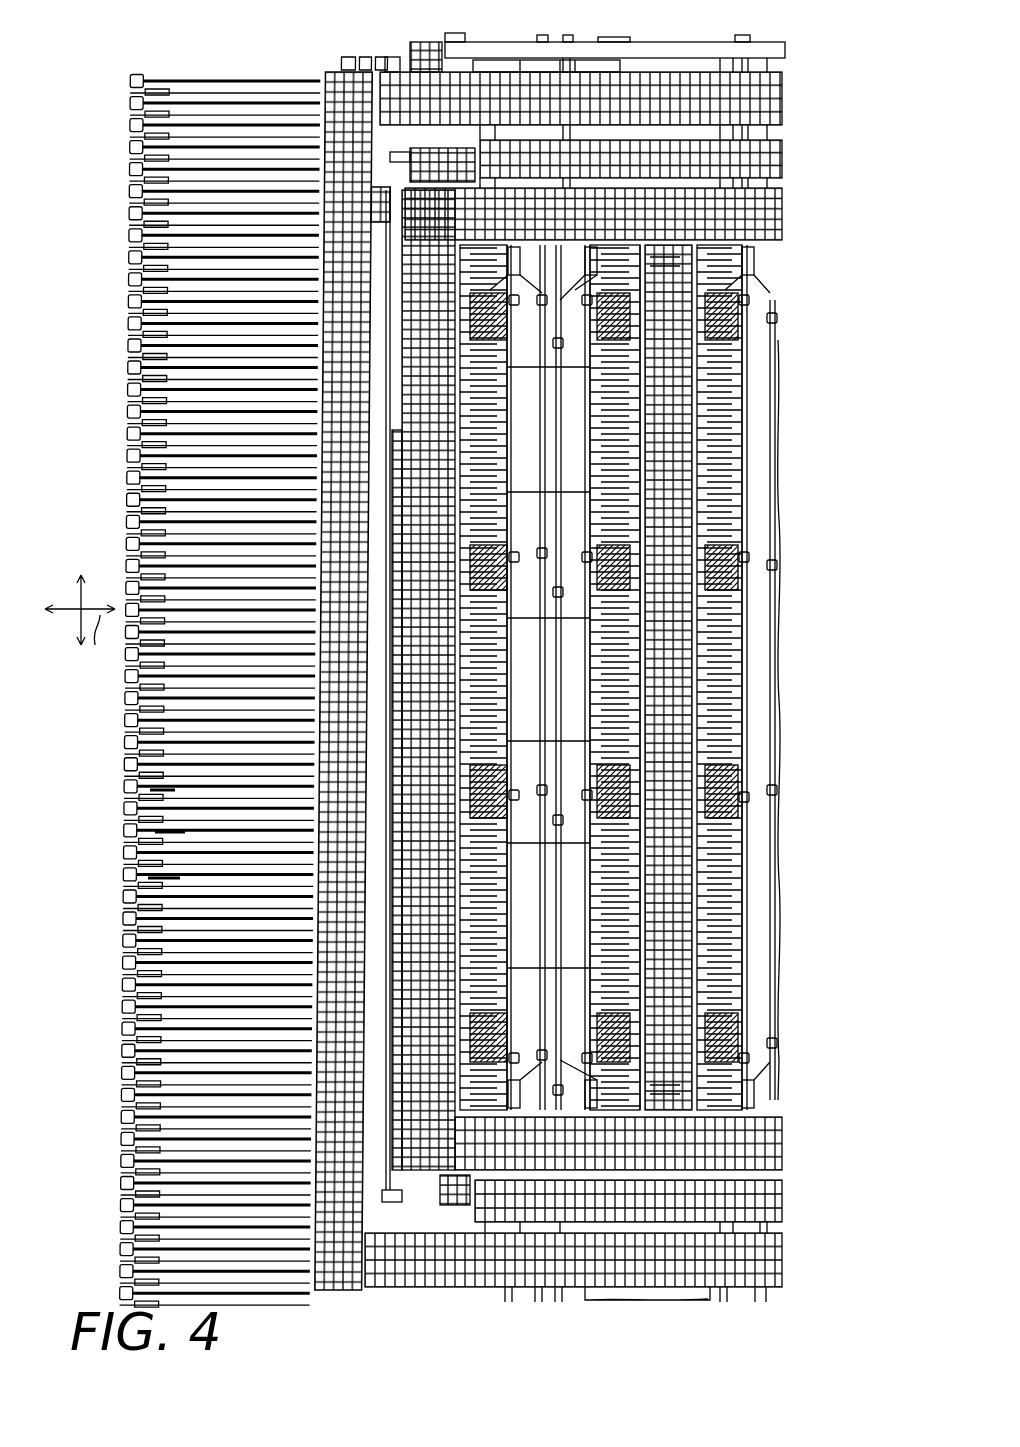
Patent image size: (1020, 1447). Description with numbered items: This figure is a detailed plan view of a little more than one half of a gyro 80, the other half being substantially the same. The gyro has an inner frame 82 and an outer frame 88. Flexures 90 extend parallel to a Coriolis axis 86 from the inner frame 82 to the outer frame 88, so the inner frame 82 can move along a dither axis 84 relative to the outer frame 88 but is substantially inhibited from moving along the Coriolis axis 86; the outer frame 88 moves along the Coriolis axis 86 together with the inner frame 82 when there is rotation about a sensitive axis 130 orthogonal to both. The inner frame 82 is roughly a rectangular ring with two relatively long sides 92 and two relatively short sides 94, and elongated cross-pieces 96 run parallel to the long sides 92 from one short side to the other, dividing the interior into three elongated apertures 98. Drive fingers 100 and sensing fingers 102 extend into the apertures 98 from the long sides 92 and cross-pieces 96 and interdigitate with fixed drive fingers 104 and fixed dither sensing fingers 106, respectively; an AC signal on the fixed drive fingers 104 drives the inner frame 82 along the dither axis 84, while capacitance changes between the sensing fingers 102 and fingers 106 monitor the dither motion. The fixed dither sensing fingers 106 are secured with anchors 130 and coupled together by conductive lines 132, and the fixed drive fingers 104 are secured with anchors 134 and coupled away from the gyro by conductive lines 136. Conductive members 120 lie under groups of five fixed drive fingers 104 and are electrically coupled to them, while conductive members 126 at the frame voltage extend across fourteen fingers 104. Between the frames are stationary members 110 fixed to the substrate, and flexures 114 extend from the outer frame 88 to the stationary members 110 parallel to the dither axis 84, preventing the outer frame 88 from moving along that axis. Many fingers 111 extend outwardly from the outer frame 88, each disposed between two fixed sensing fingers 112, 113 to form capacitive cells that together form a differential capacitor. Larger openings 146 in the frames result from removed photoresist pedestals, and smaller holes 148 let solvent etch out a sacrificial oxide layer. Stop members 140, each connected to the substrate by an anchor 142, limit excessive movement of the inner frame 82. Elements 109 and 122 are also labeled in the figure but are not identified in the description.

The gyro 80 is at (818, 53).
The inner frame 82 is at (782, 211).
The dither axis 84 is at (100, 645).
The Coriolis axis 86 is at (88, 605).
The outer frame 88 is at (782, 105).
The flexures 90 is at (310, 255).
The relatively long side 92 is at (318, 1027).
The relatively short side 94 is at (782, 231).
The elongated cross-piece 96 is at (780, 565).
The elongated aperture 98 is at (755, 620).
The drive fingers 100 is at (760, 405).
The sensing fingers 102 is at (770, 282).
The fixed drive fingers 104 is at (700, 665).
The fixed dither sensing fingers 106 is at (770, 262).
The row 109 is at (782, 158).
The stationary members 110 is at (782, 170).
The fingers 111 is at (190, 850).
The fixed sensing finger 112 is at (152, 790).
The fixed sensing finger 113 is at (185, 915).
The flexures 114 is at (428, 148).
The conductive members 120 is at (740, 330).
The conductor 122 is at (760, 350).
The conductive members 126 is at (760, 440).
The anchors 130 is at (775, 300).
The conductive lines 132 is at (765, 590).
The anchors 134 is at (745, 605).
The conductive lines 136 is at (545, 42).
The stop members 140 is at (388, 190).
The anchor 142 is at (398, 160).
The larger openings 146 is at (730, 872).
The smaller holes 148 is at (720, 887).